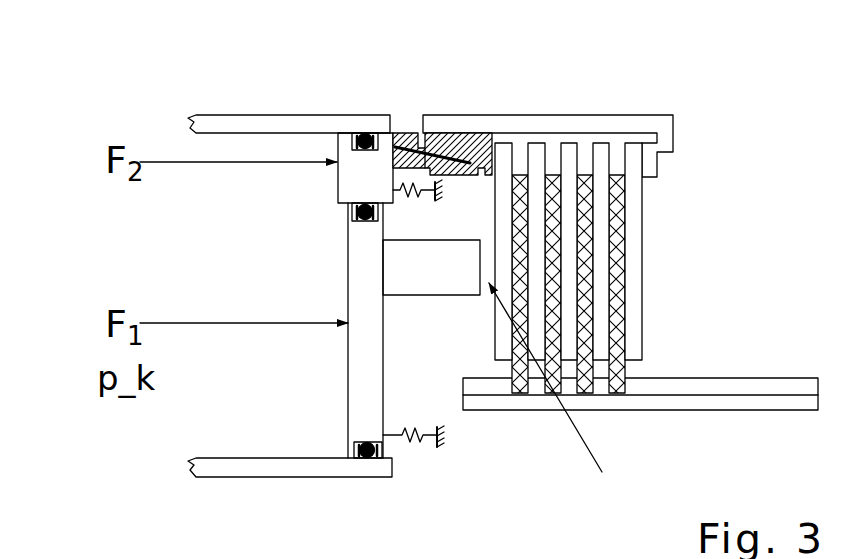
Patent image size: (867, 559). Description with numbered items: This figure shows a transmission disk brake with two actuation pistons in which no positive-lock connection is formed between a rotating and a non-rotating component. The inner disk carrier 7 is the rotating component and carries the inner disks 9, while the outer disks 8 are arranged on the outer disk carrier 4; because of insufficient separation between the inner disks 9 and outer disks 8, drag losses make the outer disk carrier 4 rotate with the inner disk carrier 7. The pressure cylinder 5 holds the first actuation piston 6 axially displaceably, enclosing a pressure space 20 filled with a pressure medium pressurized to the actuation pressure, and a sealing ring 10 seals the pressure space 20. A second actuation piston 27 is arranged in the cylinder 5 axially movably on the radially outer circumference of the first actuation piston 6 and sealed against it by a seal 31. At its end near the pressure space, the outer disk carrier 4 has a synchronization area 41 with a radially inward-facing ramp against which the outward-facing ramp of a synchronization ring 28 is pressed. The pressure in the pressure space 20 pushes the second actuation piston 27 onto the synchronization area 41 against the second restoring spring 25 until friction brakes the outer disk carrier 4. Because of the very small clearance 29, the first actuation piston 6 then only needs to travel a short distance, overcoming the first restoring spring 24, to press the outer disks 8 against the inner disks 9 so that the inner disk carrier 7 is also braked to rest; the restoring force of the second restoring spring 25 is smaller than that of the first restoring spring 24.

The outer disk carrier 4 is at (633, 125).
The pressure cylinder 5 is at (203, 123).
The first actuation piston 6 is at (365, 265).
The inner disk carrier 7 is at (713, 385).
The outer disks 8 is at (633, 295).
The inner disks 9 is at (617, 282).
The sealing ring 10 is at (372, 460).
The pressure space 20 is at (220, 422).
The first restoring spring 24 is at (398, 447).
The second restoring spring 25 is at (393, 190).
The second actuation piston 27 is at (347, 153).
The synchronization ring 28 is at (403, 133).
The clearance 29 is at (562, 401).
The seal 31 is at (366, 135).
The synchronization area 41 is at (461, 147).